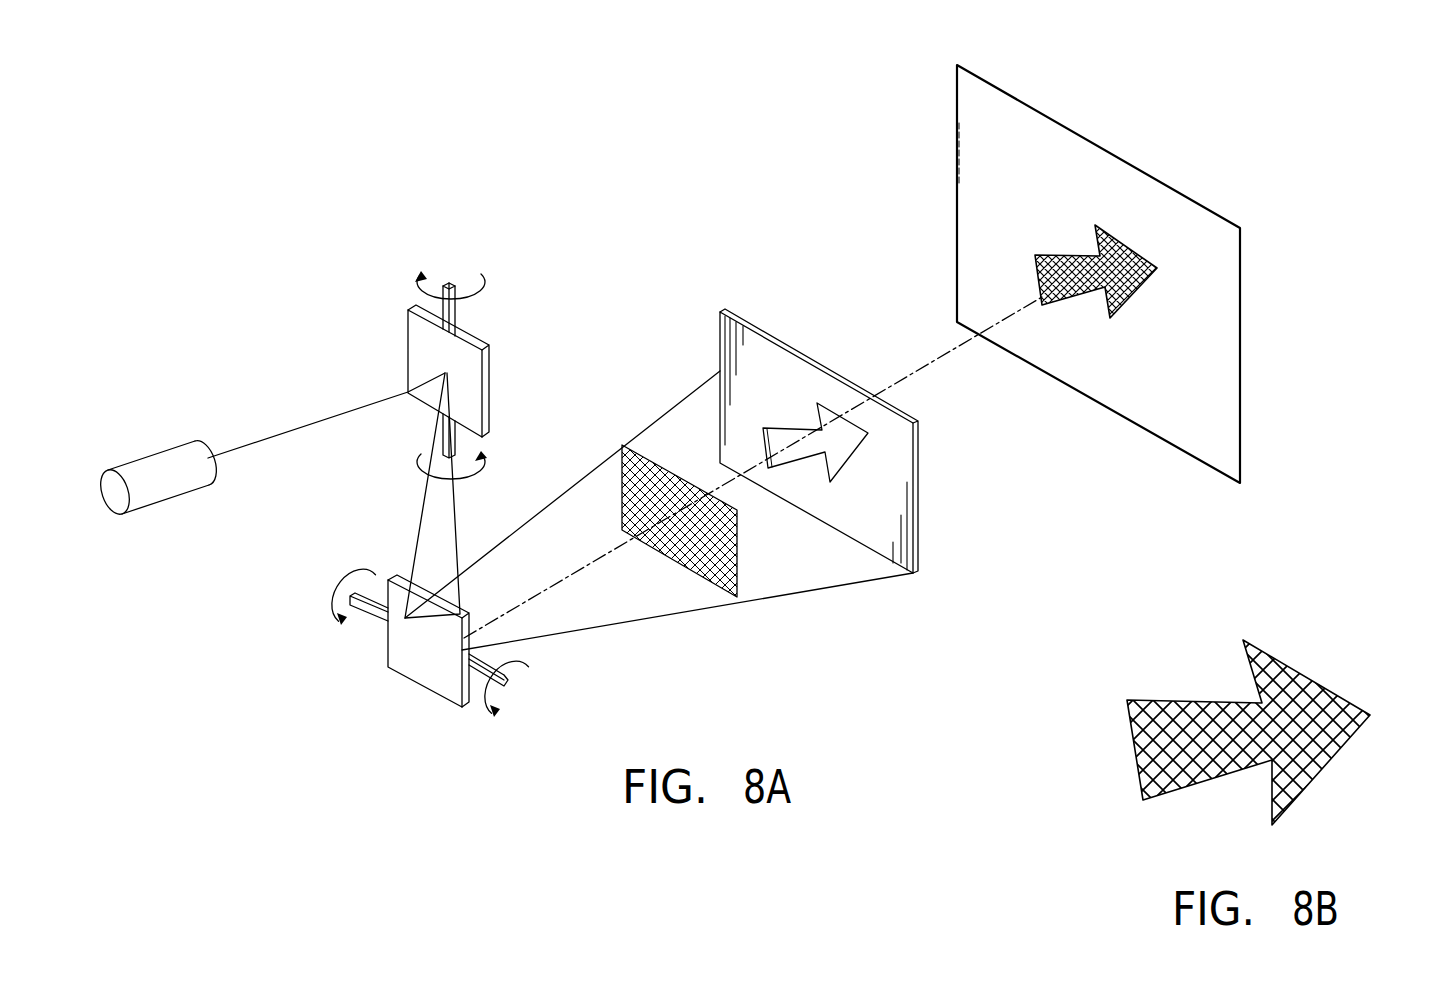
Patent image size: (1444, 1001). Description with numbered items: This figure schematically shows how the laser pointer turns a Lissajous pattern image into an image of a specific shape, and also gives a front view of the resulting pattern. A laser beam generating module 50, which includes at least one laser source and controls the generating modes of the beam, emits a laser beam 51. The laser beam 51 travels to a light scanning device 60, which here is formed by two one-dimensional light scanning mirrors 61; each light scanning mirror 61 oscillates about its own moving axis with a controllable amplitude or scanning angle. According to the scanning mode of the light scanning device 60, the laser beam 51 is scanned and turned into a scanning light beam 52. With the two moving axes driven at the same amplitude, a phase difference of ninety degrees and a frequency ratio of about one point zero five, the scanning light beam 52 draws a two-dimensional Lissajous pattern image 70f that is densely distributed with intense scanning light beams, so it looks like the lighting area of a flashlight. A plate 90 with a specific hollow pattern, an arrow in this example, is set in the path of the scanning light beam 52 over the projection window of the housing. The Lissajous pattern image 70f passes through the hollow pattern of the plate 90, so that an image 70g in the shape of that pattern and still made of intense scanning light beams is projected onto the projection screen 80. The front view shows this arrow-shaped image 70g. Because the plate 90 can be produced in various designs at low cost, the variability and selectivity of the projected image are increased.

In FIG. 8A, the laser beam generating module 50 is at (165, 469).
In FIG. 8A, the laser beam 51 is at (304, 423).
In FIG. 8A, the scanning light beam 52 is at (416, 533).
In FIG. 8A, the light scanning device 60 is at (279, 674).
In FIG. 8A, the light scanning mirror 61 is at (417, 342).
In FIG. 8A, the Lissajous pattern image 70f is at (740, 563).
In FIG. 8A, the image in the specific pattern 70g is at (1062, 292).
In FIG. 8B, the image in the specific pattern 70g is at (1310, 695).
In FIG. 8A, the projection screen 80 is at (1148, 172).
In FIG. 8A, the plate 90 is at (918, 530).